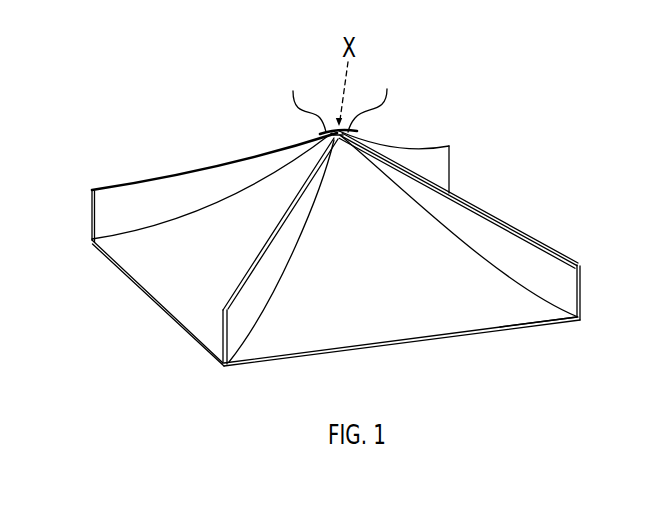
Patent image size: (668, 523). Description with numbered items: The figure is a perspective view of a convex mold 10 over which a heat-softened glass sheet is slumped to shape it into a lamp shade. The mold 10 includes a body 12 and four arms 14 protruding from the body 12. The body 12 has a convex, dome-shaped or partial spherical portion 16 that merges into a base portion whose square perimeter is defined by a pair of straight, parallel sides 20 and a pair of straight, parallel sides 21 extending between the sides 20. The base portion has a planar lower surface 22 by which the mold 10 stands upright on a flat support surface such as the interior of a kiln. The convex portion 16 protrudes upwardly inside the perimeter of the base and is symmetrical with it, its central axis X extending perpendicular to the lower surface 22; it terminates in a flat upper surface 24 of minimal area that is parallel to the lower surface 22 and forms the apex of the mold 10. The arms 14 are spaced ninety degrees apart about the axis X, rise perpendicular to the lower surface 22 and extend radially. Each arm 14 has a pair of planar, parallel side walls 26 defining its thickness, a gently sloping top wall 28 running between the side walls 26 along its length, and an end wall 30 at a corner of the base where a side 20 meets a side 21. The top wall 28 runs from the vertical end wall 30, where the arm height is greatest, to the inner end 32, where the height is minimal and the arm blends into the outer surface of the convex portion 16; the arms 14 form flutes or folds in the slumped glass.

The convex mold 10 is at (200, 110).
The body 12 is at (493, 319).
The arms 14 is at (165, 172).
The convex portion 16 is at (290, 166).
The sides 20 is at (100, 255).
The sides 21 is at (456, 335).
The lower surface 22 is at (554, 323).
The upper surface 24 is at (347, 150).
The side walls 26 is at (113, 209).
The top wall 28 is at (223, 309).
The end wall 30 is at (92, 213).
The inner ends 32 is at (341, 95).